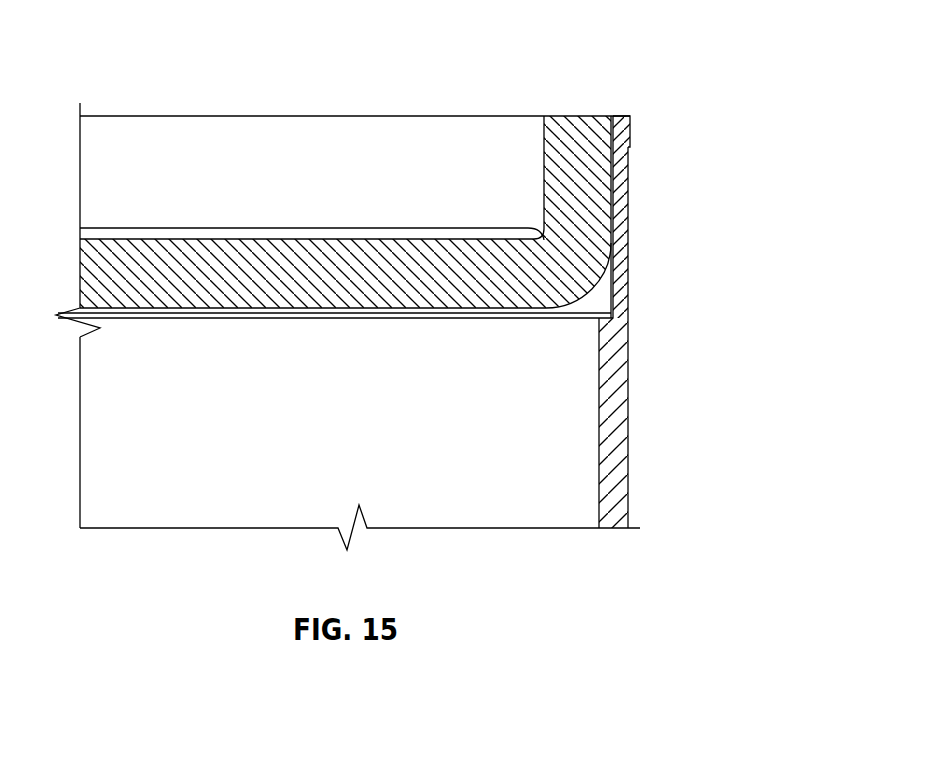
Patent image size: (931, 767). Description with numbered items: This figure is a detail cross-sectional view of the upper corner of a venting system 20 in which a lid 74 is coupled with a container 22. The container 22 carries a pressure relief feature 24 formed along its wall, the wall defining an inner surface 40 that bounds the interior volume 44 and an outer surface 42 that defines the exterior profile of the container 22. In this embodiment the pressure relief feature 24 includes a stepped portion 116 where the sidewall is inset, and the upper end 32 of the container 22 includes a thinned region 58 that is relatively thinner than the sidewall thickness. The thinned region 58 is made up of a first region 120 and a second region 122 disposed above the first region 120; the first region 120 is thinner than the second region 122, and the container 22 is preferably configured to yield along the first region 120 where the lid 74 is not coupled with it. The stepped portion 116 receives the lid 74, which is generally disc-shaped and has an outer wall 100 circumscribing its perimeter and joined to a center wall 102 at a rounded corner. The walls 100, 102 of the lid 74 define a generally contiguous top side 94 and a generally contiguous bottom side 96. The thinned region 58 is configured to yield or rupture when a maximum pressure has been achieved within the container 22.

The venting system 20 is at (686, 51).
The container 22 is at (628, 412).
The pressure relief feature 24 is at (668, 220).
The upper end 32 is at (630, 297).
The inner surface 40 is at (599, 382).
The outer surface 42 is at (628, 377).
The interior volume 44 is at (368, 446).
The thinned region 58 is at (630, 272).
The lid 74 is at (348, 238).
The top side 94 is at (283, 237).
The bottom side 96 is at (292, 310).
The outer wall 100 is at (543, 162).
The center wall 102 is at (150, 238).
The stepped portion 116 is at (646, 309).
The first region 120 is at (628, 188).
The second region 122 is at (630, 140).